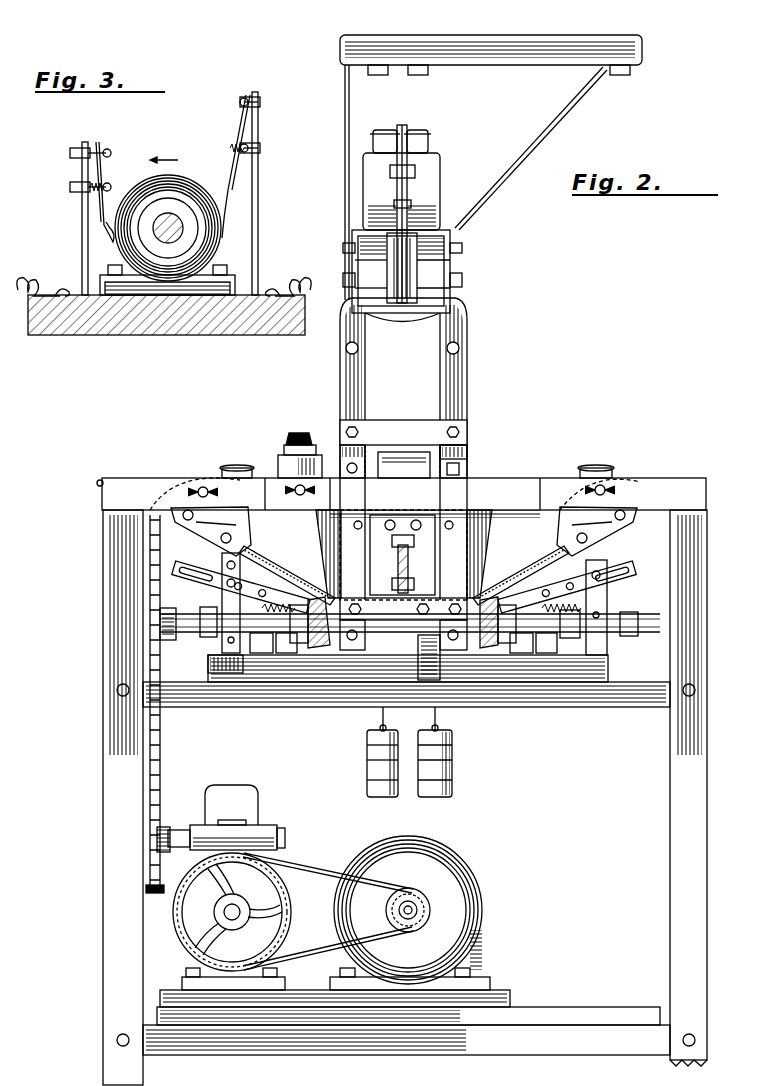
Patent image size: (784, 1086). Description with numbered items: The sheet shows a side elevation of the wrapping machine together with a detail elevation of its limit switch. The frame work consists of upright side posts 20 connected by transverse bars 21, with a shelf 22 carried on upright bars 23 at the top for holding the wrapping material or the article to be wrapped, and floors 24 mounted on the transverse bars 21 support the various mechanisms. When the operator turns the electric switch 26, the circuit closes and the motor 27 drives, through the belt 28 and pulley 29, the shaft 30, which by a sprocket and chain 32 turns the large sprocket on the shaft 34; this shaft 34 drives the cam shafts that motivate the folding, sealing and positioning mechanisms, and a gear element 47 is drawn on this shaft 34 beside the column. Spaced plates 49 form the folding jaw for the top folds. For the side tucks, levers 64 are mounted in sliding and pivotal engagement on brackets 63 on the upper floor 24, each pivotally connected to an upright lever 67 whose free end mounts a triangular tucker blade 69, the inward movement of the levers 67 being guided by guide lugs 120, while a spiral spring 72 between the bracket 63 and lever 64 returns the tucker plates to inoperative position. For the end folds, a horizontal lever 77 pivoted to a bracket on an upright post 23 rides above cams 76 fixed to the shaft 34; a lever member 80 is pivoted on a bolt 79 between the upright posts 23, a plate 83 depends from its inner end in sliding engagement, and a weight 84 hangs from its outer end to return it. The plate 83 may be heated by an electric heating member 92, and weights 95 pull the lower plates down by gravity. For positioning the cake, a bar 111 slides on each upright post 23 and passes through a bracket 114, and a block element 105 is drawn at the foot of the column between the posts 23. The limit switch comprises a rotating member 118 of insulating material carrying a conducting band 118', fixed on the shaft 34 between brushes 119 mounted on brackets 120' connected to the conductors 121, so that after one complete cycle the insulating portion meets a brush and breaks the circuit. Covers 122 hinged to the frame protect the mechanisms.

In FIG. 2, the upright side posts 20 is at (103, 900).
In FIG. 2, the transverse bars 21 is at (315, 700).
In FIG. 2, the shelf 22 is at (460, 52).
In FIG. 2, the upright bars 23 is at (345, 385).
In FIG. 3, the floors 24 is at (145, 325).
In FIG. 2, the floors 24 is at (512, 683).
In FIG. 2, the electric switch 26 is at (288, 450).
In FIG. 2, the motor 27 is at (462, 888).
In FIG. 2, the belt 28 is at (306, 862).
In FIG. 2, the pulley 29 is at (291, 925).
In FIG. 2, the shaft 30 is at (186, 834).
In FIG. 2, the chain 32 is at (162, 742).
In FIG. 3, the shaft 34 is at (180, 232).
In FIG. 2, the shaft 34 is at (190, 636).
In FIG. 2, the bevel gear 47 is at (318, 605).
In FIG. 2, the spaced plates 49 is at (228, 468).
In FIG. 2, the brackets 63 is at (608, 626).
In FIG. 2, the levers 64 is at (187, 570).
In FIG. 2, the lever 67 is at (280, 572).
In FIG. 2, the tucker blade 69 is at (240, 530).
In FIG. 2, the spiral spring 72 is at (580, 615).
In FIG. 2, the cams 76 is at (430, 660).
In FIG. 2, the horizontal lever 77 is at (415, 585).
In FIG. 2, the bolt 79 is at (412, 166).
In FIG. 2, the lever member 80 is at (404, 130).
In FIG. 2, the plate 83 is at (432, 186).
In FIG. 2, the weight 84 is at (403, 300).
In FIG. 2, the electric heating member 92 is at (440, 262).
In FIG. 2, the weights 95 is at (430, 797).
In FIG. 2, the clamp block 105 is at (402, 450).
In FIG. 2, the bar 111 is at (462, 468).
In FIG. 2, the bracket 114 is at (458, 458).
In FIG. 3, the rotating member 118 is at (168, 209).
In FIG. 2, the rotating member 118 is at (210, 691).
In FIG. 3, the band 118' is at (147, 162).
In FIG. 3, the brushes 119 is at (102, 212).
In FIG. 2, the guide lugs 120 is at (249, 644).
In FIG. 3, the brackets 120' is at (170, 193).
In FIG. 3, the conductors 121 is at (30, 278).
In FIG. 2, the covers 122 is at (158, 488).